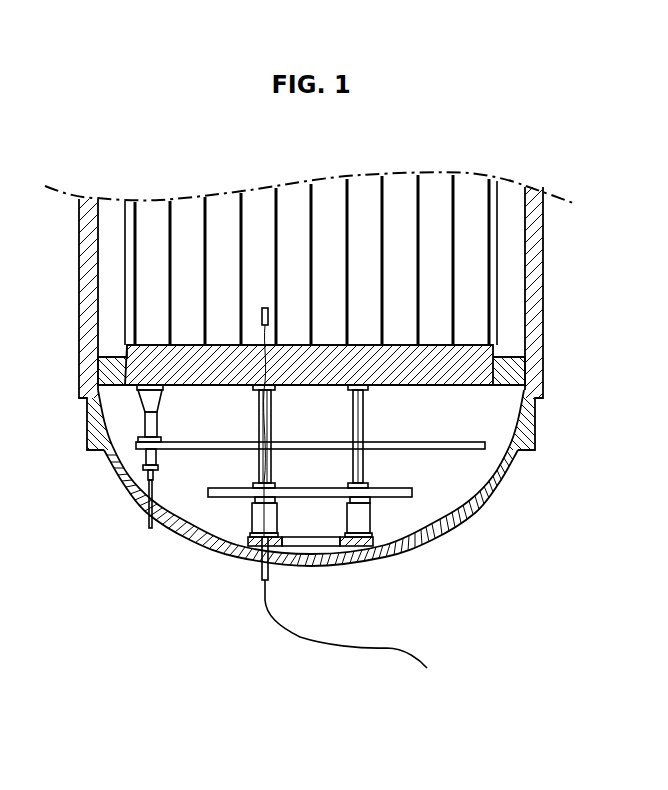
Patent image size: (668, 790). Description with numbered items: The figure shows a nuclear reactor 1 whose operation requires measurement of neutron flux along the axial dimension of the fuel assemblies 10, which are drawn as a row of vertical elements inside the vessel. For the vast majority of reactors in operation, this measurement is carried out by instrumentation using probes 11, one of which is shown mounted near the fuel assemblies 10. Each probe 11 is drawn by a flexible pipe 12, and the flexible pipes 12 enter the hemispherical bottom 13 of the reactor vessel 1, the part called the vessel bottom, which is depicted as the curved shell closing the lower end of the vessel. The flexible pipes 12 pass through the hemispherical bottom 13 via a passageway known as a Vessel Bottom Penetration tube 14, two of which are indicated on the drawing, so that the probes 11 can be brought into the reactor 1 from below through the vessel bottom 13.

The nuclear reactor 1 is at (574, 318).
The fuel assemblies 10 is at (433, 302).
The probe 11 is at (262, 311).
The flexible pipe 12 is at (393, 639).
The hemispherical bottom 13 is at (463, 530).
The Vessel Bottom Penetration tube 14 is at (136, 521).